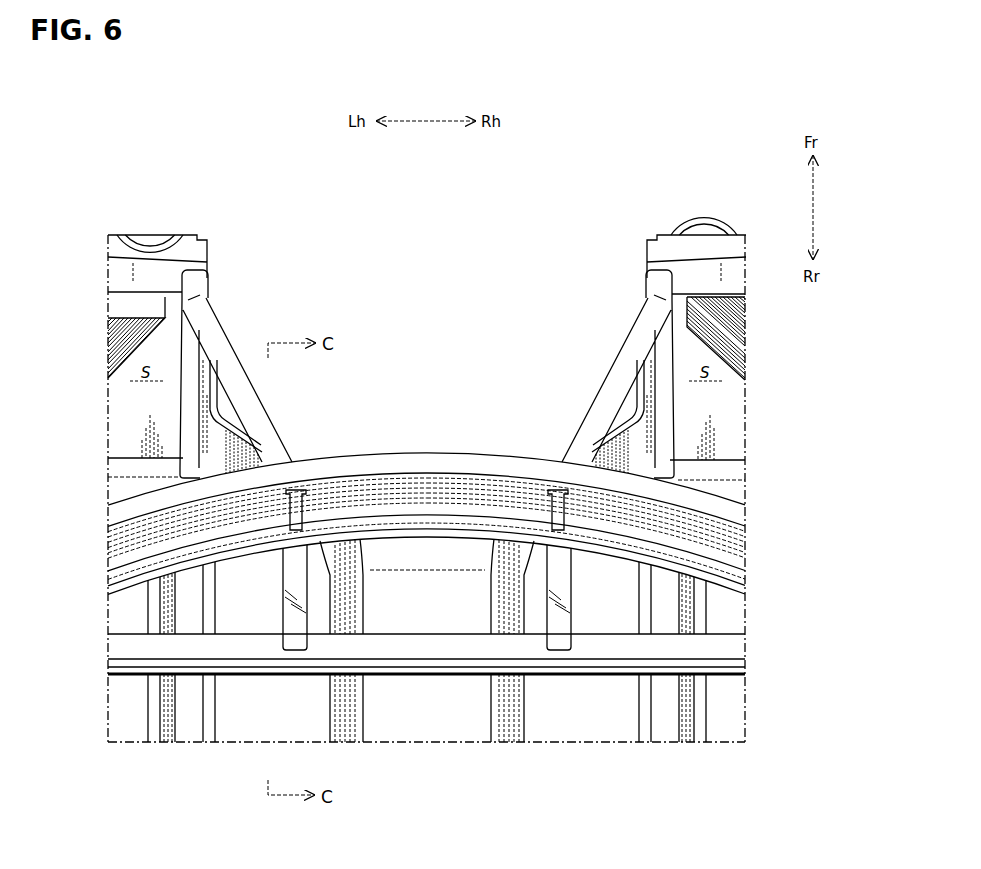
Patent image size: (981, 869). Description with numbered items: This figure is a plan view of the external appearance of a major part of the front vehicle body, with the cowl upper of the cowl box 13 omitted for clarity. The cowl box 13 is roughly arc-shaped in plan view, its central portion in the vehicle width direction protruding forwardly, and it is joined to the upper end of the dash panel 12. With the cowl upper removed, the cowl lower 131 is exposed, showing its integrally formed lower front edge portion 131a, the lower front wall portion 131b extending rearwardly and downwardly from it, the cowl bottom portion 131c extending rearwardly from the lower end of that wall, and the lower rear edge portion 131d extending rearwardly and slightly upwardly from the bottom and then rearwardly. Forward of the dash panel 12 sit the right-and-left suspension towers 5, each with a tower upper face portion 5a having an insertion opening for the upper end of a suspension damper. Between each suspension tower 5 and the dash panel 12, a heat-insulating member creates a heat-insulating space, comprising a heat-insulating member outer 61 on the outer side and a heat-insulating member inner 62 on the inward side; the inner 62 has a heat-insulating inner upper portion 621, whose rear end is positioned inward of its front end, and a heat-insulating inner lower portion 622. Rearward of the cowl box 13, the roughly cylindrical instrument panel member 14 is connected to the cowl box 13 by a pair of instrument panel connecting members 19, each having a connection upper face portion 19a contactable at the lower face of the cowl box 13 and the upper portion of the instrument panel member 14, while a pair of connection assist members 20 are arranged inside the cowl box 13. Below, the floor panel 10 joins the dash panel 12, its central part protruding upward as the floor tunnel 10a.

The suspension tower 5 is at (214, 240).
The tower upper face portion 5a is at (192, 243).
The floor panel 10 is at (548, 726).
The floor tunnel 10a is at (432, 707).
The dash panel 12 is at (132, 477).
The cowl box 13 is at (419, 468).
The instrument panel member 14 is at (721, 681).
The instrument panel connecting member 19 is at (428, 668).
The connection upper face portion 19a is at (283, 641).
The connection assist member 20 is at (306, 515).
The heat-insulating member outer 61 is at (130, 395).
The heat-insulating member inner 62 is at (427, 374).
The heat-insulating inner upper portion 621 is at (222, 333).
The heat-insulating inner lower portion 622 is at (217, 450).
The cowl lower 131 is at (419, 468).
The lower front edge portion 131a is at (422, 464).
The lower front wall portion 131b is at (140, 532).
The cowl bottom portion 131c is at (730, 562).
The lower rear edge portion 131d is at (135, 580).